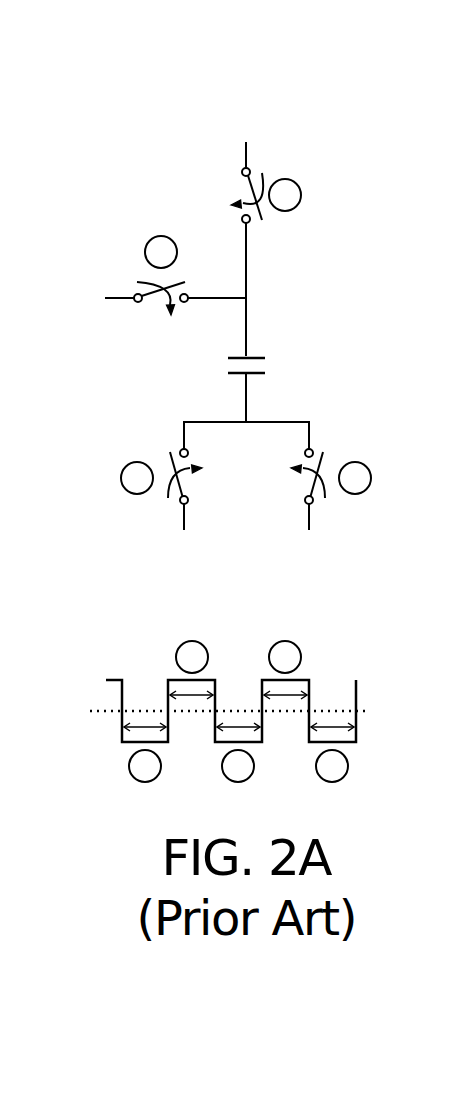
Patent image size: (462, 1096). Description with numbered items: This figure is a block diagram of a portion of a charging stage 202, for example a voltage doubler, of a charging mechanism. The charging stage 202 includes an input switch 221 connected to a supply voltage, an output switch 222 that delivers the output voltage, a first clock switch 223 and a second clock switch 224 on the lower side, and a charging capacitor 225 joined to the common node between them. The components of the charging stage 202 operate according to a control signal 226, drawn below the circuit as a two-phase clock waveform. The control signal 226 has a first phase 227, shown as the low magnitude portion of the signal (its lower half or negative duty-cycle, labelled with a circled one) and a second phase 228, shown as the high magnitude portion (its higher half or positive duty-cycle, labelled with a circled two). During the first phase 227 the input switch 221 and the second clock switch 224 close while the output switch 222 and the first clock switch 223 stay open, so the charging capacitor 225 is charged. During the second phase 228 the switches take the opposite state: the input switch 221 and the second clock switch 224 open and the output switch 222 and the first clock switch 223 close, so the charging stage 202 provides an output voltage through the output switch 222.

The charging stage 202 is at (226, 70).
The input switch 221 is at (247, 193).
The output switch 222 is at (155, 295).
The first clock switch 223 is at (173, 465).
The second clock switch 224 is at (322, 463).
The charging capacitor 225 is at (257, 357).
The control signal 226 is at (182, 612).
The first phase 227 is at (382, 731).
The second phase 228 is at (382, 692).